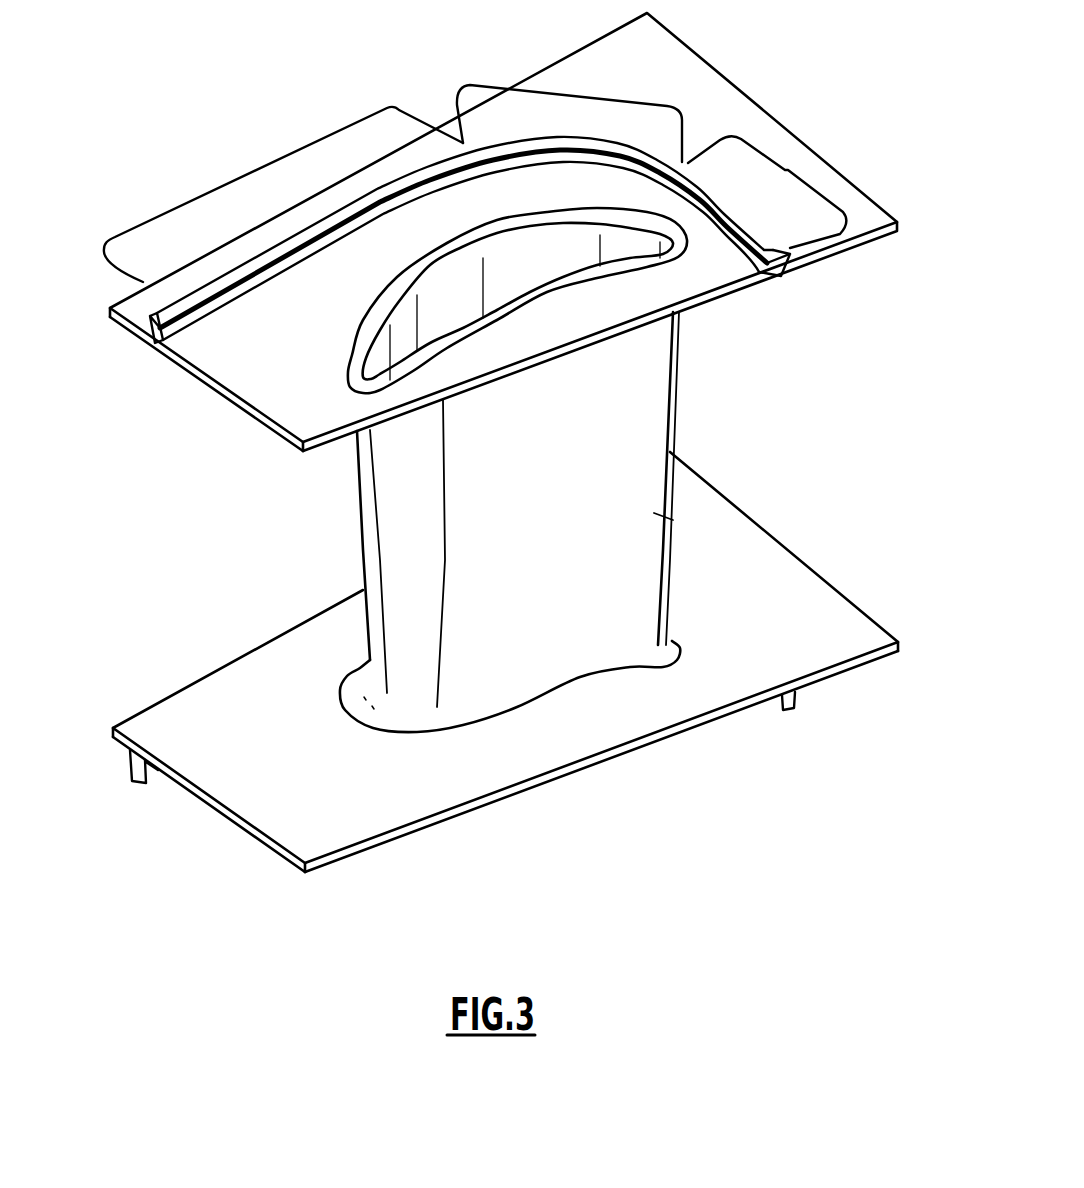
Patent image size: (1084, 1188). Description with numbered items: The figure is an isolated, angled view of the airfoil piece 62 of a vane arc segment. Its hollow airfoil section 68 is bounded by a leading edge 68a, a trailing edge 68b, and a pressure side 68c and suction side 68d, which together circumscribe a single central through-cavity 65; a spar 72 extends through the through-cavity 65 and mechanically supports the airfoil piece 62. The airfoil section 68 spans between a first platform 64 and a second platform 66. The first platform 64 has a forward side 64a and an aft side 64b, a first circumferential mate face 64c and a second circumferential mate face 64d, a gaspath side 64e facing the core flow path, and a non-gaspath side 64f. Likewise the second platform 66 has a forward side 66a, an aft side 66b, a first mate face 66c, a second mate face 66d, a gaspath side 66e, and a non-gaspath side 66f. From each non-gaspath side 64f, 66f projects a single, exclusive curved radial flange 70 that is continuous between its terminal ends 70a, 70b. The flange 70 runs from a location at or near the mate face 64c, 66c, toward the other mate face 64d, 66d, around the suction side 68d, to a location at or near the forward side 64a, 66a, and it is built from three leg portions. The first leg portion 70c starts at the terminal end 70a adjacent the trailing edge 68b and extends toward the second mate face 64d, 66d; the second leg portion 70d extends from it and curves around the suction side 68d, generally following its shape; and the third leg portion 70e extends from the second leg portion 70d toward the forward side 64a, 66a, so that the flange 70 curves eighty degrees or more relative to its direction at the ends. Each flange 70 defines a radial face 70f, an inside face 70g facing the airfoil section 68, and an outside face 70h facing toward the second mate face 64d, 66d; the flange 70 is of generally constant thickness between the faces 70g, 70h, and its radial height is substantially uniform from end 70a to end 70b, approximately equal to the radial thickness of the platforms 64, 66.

The airfoil piece 62 is at (195, 578).
The first platform 64 is at (830, 245).
The forward side of first platform 64a is at (207, 380).
The aft side of first platform 64b is at (763, 109).
The first circumferential mate face of first platform 64c is at (887, 236).
The second circumferential mate face of first platform 64d is at (596, 40).
The gaspath side of first platform 64e is at (243, 410).
The non-gaspath side of first platform 64f is at (672, 60).
The central through-cavity 65 is at (455, 329).
The second platform 66 is at (830, 650).
The forward side of second platform 66a is at (272, 847).
The aft side of second platform 66b is at (897, 642).
The first circumferential mate face of second platform 66c is at (440, 818).
The second circumferential mate face of second platform 66d is at (167, 699).
The gaspath side of second platform 66e is at (233, 800).
The non-gaspath side of second platform 66f is at (653, 745).
The airfoil section 68 is at (690, 637).
The leading edge 68a is at (390, 637).
The trailing edge 68b is at (672, 428).
The pressure side 68c is at (623, 363).
The suction side 68d is at (417, 247).
The curved radial flange 70 is at (258, 258).
The first terminal end of flange 70a is at (797, 263).
The second terminal end of flange 70b is at (145, 320).
The first leg portion 70c is at (789, 170).
The second leg portion 70d is at (563, 92).
The third leg portion 70e is at (233, 173).
The radial face 70f is at (645, 163).
The inside face 70g is at (225, 291).
The outside face 70h is at (231, 284).
The spar 72 is at (673, 520).